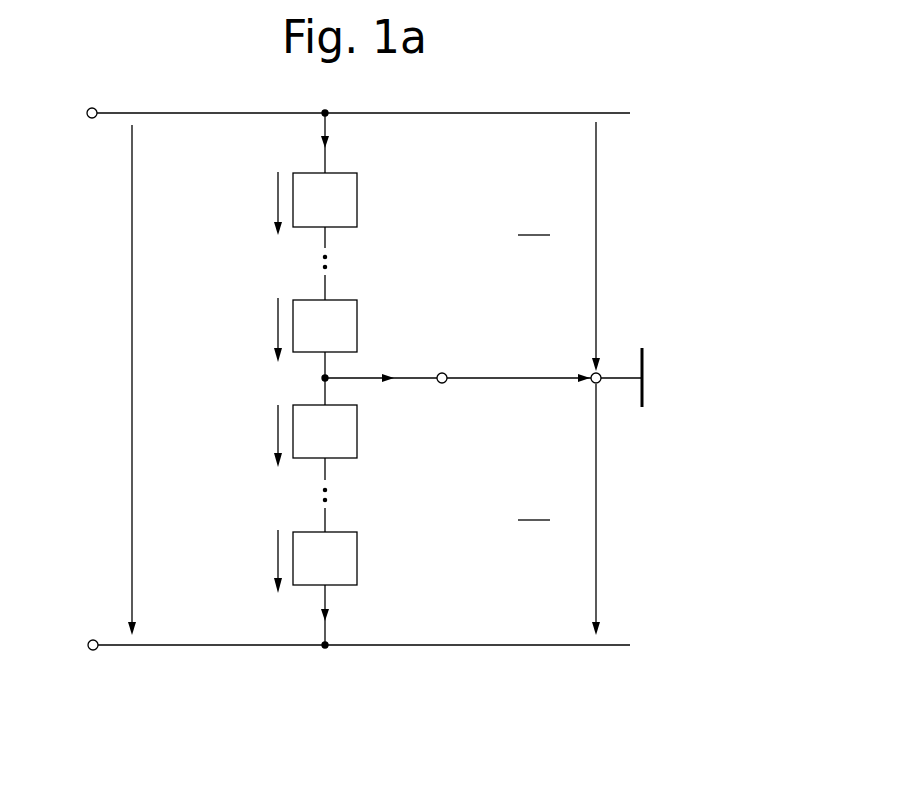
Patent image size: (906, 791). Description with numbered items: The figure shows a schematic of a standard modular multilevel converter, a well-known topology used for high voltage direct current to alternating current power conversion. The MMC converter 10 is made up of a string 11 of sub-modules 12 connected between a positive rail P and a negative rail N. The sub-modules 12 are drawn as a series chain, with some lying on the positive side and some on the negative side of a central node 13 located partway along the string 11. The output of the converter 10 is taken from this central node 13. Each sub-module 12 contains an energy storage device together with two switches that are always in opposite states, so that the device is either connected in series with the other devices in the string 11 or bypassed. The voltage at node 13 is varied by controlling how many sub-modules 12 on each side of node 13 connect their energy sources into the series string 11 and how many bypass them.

The MMC converter 10 is at (678, 170).
The string 11 is at (362, 680).
The sub-module 12 is at (357, 203).
The central node 13 is at (442, 384).